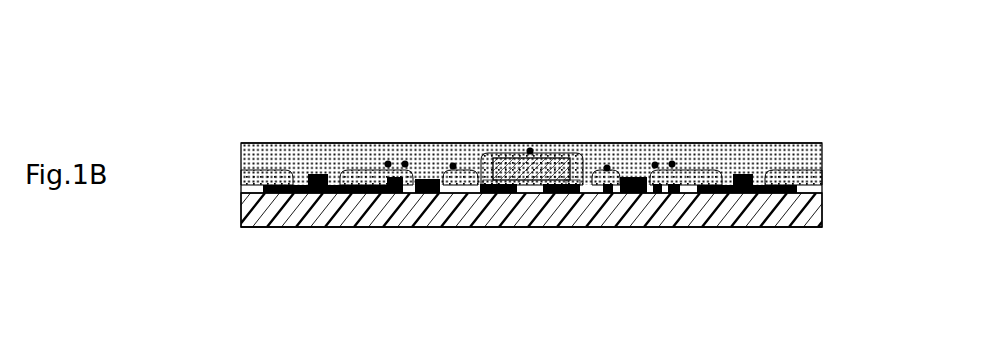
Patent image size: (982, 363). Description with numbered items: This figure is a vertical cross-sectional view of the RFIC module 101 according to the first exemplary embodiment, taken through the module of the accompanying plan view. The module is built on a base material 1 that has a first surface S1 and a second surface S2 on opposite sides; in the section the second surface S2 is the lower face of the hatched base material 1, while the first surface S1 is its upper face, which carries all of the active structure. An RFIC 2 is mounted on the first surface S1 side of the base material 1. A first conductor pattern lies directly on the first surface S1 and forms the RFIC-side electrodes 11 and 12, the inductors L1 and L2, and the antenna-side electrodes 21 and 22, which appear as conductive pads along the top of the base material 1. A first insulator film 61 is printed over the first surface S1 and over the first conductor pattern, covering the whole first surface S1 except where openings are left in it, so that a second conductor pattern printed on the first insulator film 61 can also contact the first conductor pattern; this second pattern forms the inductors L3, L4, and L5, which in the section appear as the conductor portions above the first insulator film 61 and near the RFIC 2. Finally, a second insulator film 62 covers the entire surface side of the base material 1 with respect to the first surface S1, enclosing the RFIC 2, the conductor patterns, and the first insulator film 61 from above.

The RFIC module 101 is at (806, 68).
The base material 1 is at (822, 211).
The RFIC 2 is at (551, 158).
The RFIC-side electrode 11 is at (476, 168).
The RFIC-side electrode 12 is at (588, 168).
The antenna-side electrode 21 is at (283, 185).
The antenna-side electrode 22 is at (765, 178).
The first insulator film 61 is at (822, 187).
The second insulator film 62 is at (822, 152).
The first surface S1 is at (238, 193).
The second surface S2 is at (238, 228).
The inductor L1 is at (440, 193).
The inductor L2 is at (667, 193).
The inductor L3 is at (453, 165).
The inductor L4 is at (672, 163).
The inductor L5 is at (530, 150).